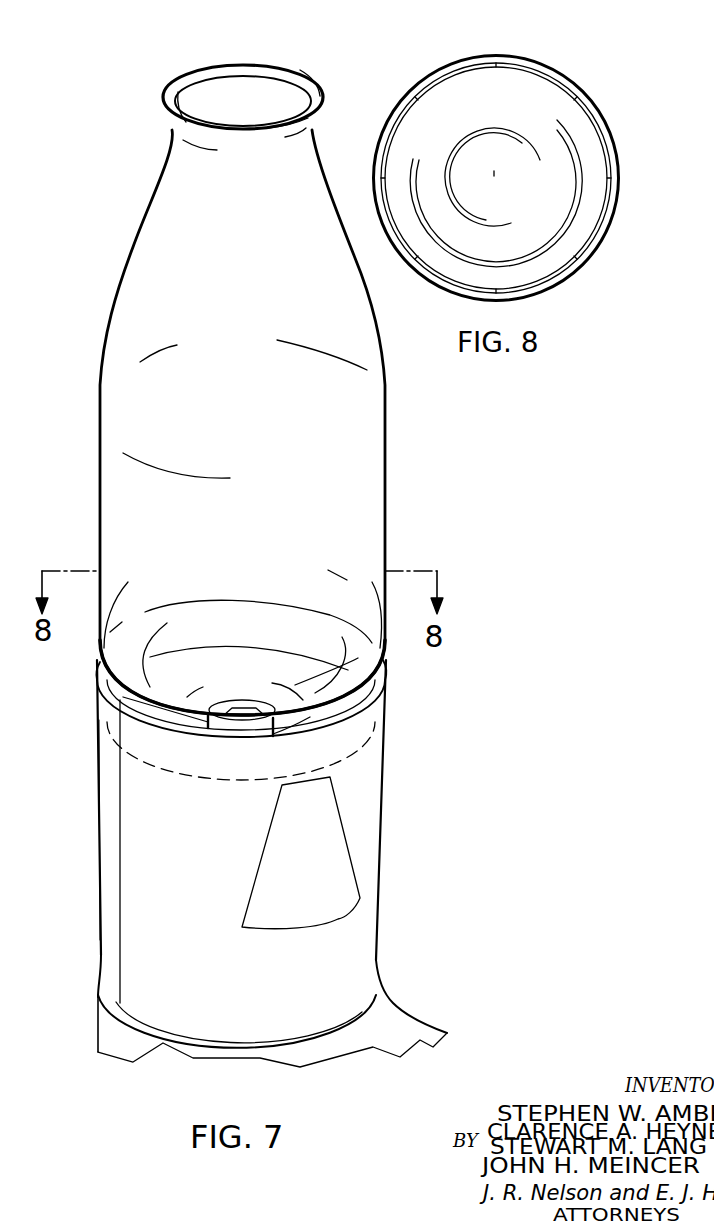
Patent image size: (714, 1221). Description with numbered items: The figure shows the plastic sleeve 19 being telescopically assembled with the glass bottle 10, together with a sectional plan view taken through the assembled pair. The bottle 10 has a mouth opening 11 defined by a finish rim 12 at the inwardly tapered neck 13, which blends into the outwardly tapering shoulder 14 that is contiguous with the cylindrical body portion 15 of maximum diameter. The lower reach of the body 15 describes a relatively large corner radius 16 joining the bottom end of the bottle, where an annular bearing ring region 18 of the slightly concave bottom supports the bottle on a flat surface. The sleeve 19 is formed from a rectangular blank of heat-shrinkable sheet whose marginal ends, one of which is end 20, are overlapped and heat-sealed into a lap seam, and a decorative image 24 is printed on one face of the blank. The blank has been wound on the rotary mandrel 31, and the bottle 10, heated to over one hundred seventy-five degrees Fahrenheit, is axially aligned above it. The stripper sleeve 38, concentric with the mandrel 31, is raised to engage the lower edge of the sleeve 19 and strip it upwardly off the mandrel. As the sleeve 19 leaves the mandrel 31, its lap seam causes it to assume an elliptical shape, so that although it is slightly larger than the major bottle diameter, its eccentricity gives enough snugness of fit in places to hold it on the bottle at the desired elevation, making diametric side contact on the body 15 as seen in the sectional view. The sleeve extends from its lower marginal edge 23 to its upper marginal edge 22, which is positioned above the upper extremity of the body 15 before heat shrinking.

In FIG. 7, the glass bottle 10 is at (250, 313).
In FIG. 7, the mouth opening 11 is at (243, 90).
In FIG. 7, the finish rim 12 is at (315, 80).
In FIG. 7, the neck 13 is at (312, 130).
In FIG. 7, the shoulder 14 is at (355, 270).
In FIG. 7, the cylindrical body portion 15 is at (388, 488).
In FIG. 8, the cylindrical body portion 15 is at (390, 171).
In FIG. 7, the corner radius 16 is at (386, 665).
In FIG. 8, the annular bearing ring region 18 is at (505, 102).
In FIG. 7, the sleeve 19 is at (242, 862).
In FIG. 8, the sleeve 19 is at (384, 132).
In FIG. 7, the marginal end 20 is at (120, 830).
In FIG. 7, the upper marginal edge 22 is at (388, 662).
In FIG. 7, the lower marginal edge 23 is at (213, 1030).
In FIG. 7, the decorative image 24 is at (340, 915).
In FIG. 7, the rotary mandrel head 31 is at (292, 728).
In FIG. 7, the stripper sleeve 38 is at (100, 980).